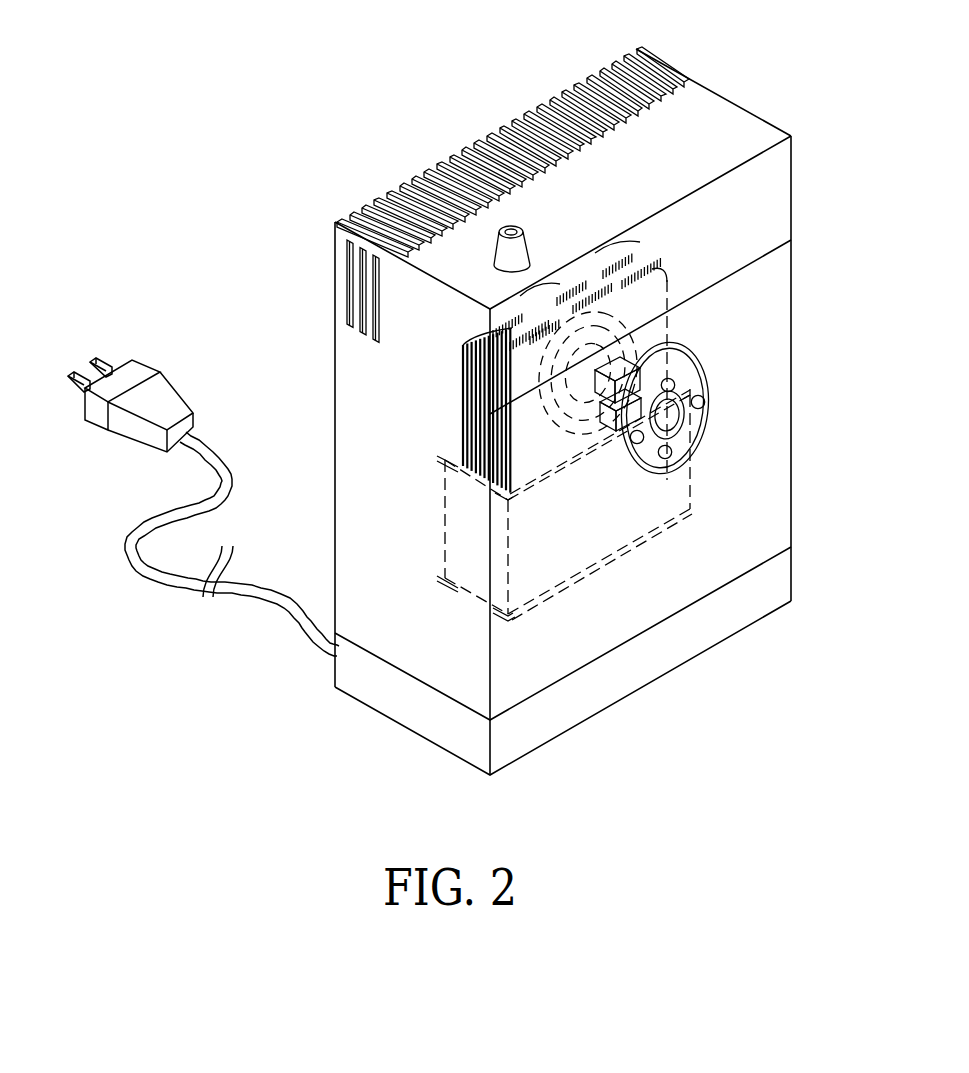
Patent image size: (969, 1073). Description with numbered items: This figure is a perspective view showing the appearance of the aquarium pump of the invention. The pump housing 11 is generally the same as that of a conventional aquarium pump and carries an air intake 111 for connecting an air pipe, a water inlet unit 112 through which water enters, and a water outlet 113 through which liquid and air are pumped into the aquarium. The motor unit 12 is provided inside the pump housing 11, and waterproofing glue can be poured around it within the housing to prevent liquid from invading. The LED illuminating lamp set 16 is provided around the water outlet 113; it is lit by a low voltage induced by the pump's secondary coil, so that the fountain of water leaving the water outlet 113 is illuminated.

The pump housing 11 is at (786, 118).
The air intake 111 is at (512, 229).
The water inlet unit 112 is at (365, 295).
The motor unit 12 is at (653, 252).
The water outlet 113 is at (712, 420).
The LED illuminating lamp set 16 is at (665, 456).